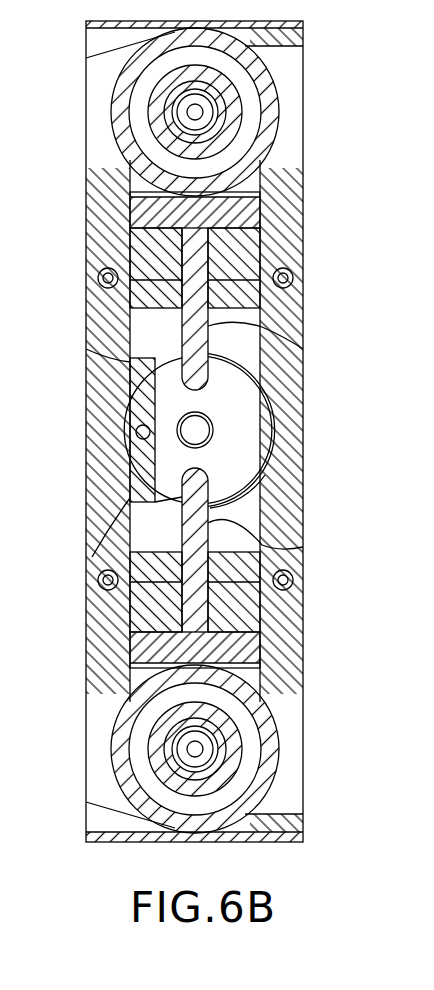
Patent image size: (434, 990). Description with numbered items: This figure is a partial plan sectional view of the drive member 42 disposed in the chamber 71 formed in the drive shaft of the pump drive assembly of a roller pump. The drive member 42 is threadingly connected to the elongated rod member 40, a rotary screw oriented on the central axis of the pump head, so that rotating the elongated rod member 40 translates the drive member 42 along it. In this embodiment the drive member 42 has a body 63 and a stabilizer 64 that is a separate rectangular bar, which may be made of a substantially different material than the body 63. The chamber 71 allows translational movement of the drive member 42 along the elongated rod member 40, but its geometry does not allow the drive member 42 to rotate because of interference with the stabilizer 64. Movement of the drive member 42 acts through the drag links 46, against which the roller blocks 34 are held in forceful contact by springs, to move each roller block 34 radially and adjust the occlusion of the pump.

The roller block 34 is at (265, 228).
The elongated rod member 40 is at (213, 432).
The drive member 42 is at (272, 393).
The drag link 46 is at (303, 350).
The body 63 is at (272, 458).
The stabilizer 64 is at (150, 357).
The chamber 71 is at (130, 556).